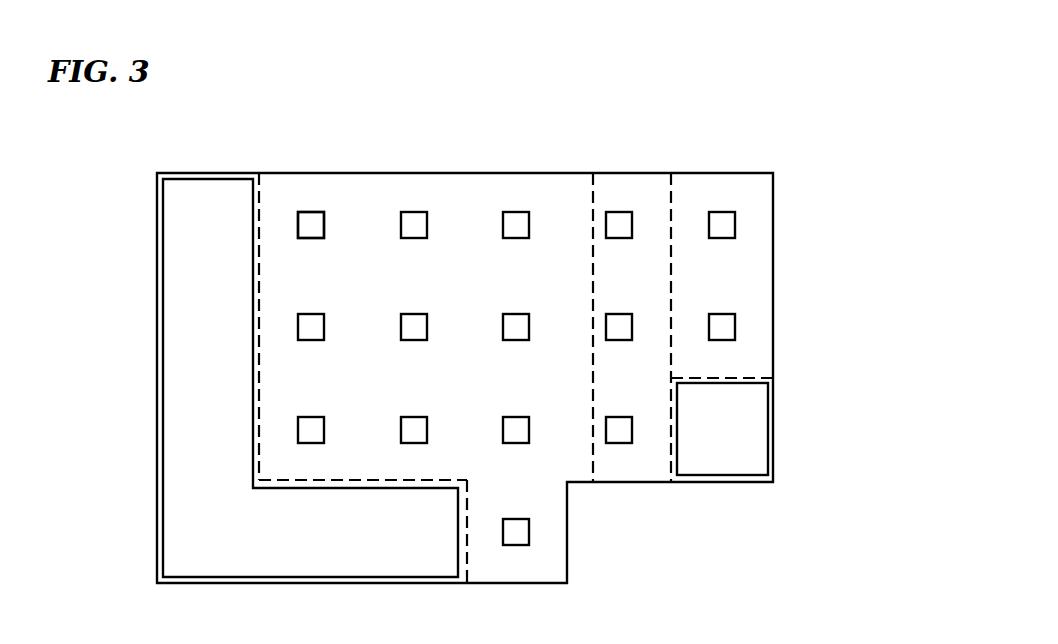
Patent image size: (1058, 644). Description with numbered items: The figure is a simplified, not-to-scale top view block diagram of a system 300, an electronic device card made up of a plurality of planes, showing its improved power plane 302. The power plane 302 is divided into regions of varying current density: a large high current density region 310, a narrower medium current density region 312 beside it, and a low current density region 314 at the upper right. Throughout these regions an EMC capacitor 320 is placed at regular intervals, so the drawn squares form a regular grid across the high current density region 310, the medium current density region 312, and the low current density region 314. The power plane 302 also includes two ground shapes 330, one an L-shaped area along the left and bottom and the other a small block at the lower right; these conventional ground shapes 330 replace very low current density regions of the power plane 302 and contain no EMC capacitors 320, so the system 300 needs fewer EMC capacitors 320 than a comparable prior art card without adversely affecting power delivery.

The system 300 is at (888, 107).
The power plane 302 is at (157, 232).
The high current density region 310 is at (428, 386).
The medium current density region 312 is at (647, 380).
The low current density region 314 is at (737, 286).
The EMC capacitor 320 is at (318, 238).
The ground shape 330 is at (242, 536).